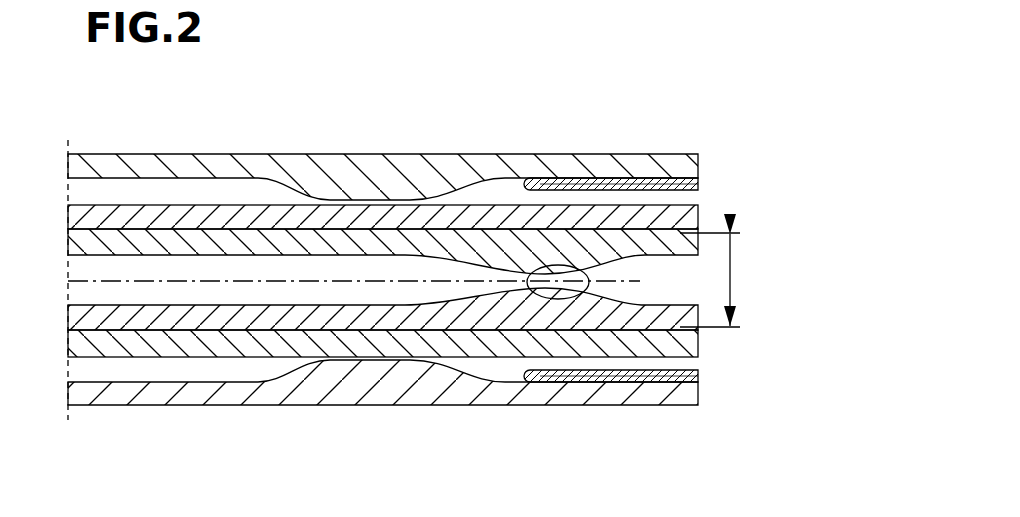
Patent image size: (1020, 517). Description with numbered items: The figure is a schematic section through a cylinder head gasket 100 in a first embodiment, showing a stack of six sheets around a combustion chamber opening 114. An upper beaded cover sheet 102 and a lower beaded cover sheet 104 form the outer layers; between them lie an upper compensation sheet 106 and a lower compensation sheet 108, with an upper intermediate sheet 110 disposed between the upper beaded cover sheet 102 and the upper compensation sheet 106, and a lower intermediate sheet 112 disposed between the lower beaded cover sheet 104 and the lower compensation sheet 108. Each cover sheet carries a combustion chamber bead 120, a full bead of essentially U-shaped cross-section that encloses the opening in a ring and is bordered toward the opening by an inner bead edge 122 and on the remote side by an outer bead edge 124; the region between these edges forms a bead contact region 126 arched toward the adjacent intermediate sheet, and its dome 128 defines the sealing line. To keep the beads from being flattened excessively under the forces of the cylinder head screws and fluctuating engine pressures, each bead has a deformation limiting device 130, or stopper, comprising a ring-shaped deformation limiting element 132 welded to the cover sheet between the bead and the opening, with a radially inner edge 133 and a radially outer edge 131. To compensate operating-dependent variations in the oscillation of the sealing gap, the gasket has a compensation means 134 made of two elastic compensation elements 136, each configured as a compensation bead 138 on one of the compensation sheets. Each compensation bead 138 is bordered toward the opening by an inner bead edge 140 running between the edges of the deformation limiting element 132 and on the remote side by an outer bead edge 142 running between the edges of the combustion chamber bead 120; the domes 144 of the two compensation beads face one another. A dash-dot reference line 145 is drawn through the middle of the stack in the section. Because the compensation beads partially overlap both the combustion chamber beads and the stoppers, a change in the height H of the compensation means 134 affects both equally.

The cylinder head gasket 100 is at (158, 153).
The upper beaded cover sheet 102 is at (696, 160).
The lower beaded cover sheet 104 is at (696, 395).
The upper compensation sheet 106 is at (696, 243).
The lower compensation sheet 108 is at (696, 318).
The upper intermediate sheet 110 is at (696, 216).
The lower intermediate sheet 112 is at (696, 343).
The combustion chamber opening 114 is at (815, 287).
The height of the compensation means H is at (746, 279).
The combustion chamber bead 120 is at (353, 158).
The inner bead edge 122 is at (540, 230).
The outer bead edge 124 is at (340, 196).
The bead contact region 126 is at (416, 160).
The dome 128 is at (262, 180).
The deformation limiting device 130 is at (614, 157).
The radially outer edge 131 is at (515, 172).
The deformation limiting element 132 is at (696, 181).
The radially inner edge 133 is at (696, 188).
The compensation means 134 is at (422, 282).
The elastic compensation element 136 is at (575, 238).
The compensation bead 138 is at (510, 244).
The inner bead edge 140 is at (650, 162).
The outer bead edge 142 is at (400, 198).
The dome 144 is at (585, 272).
The center axis 145 is at (80, 282).